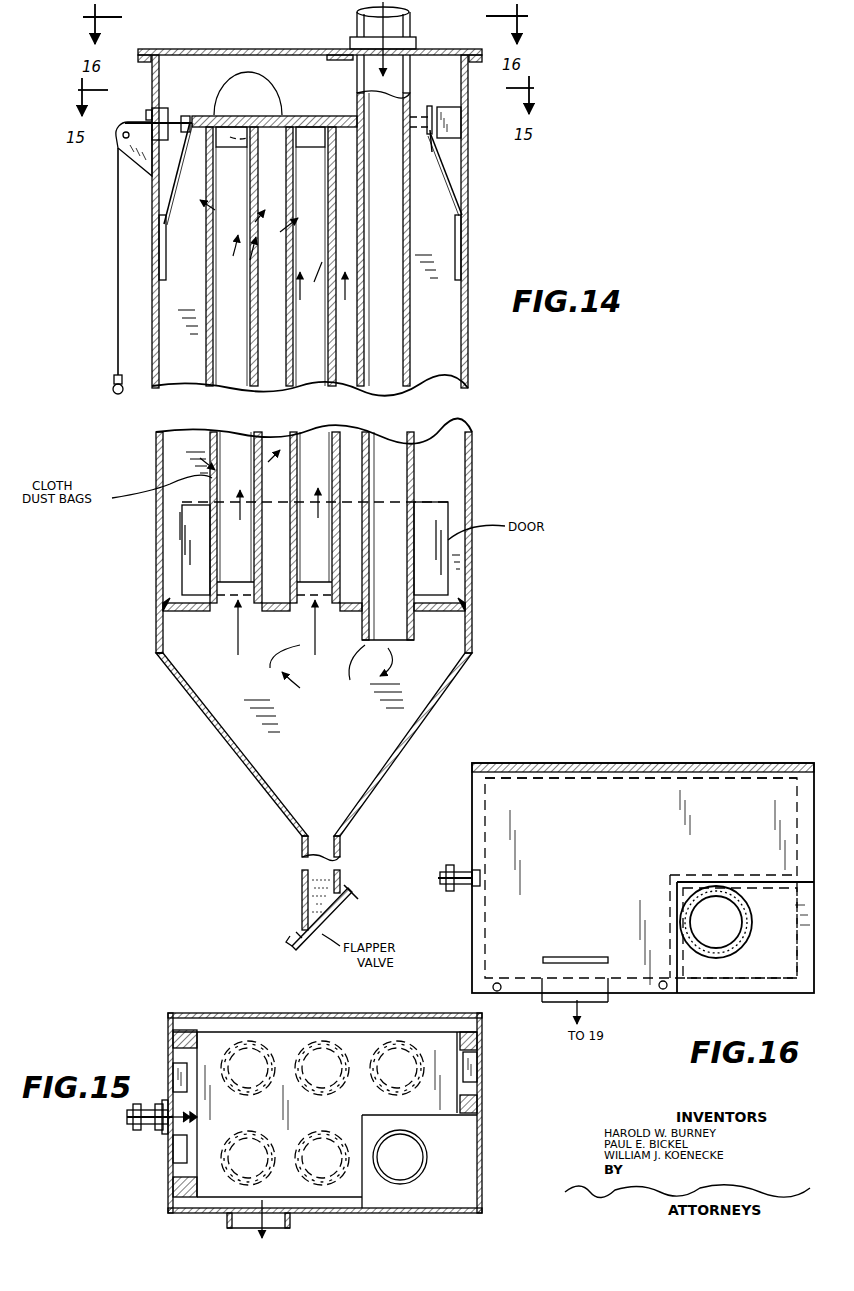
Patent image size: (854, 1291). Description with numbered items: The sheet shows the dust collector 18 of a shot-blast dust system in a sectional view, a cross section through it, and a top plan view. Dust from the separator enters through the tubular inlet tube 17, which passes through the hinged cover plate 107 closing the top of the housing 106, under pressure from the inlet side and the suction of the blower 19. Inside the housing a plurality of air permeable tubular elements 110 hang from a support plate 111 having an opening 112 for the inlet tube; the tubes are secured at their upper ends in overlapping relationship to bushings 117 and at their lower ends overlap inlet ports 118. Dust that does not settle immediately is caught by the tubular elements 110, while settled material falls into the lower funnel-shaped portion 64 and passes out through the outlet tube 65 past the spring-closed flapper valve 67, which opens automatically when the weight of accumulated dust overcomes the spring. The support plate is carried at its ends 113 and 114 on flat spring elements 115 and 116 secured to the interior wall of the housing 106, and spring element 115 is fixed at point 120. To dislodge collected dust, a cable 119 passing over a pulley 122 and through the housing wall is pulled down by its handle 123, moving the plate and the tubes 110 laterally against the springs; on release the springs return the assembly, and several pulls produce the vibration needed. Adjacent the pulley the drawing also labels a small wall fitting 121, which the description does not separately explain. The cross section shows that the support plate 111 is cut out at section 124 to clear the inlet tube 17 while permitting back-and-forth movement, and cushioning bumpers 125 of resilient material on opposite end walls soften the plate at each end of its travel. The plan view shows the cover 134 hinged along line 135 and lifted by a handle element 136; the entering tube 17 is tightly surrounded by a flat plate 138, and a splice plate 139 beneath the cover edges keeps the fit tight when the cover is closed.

In FIG. 14, the inlet tube 17 is at (400, 25).
In FIG. 15, the inlet tube 17 is at (403, 1172).
In FIG. 16, the inlet tube 17 is at (720, 889).
In FIG. 16, the dust collector 18 is at (648, 858).
In FIG. 14, the suction blower 19 is at (262, 68).
In FIG. 15, the suction blower 19 is at (227, 1222).
In FIG. 14, the funnel-shaped portion 64 is at (236, 742).
In FIG. 14, the outlet tube 65 is at (302, 890).
In FIG. 14, the flapper valve 67 is at (332, 932).
In FIG. 14, the housing 106 is at (155, 540).
In FIG. 15, the housing 106 is at (250, 1013).
In FIG. 14, the hinged cover plate 107 is at (238, 49).
In FIG. 14, the air permeable tubular elements 110 is at (206, 300).
In FIG. 15, the air permeable tubular elements 110 is at (408, 1042).
In FIG. 15, the support plate 111 is at (294, 1042).
In FIG. 14, the opening 112 is at (414, 117).
In FIG. 14, the end of support plate 113 is at (214, 116).
In FIG. 14, the end of support plate 114 is at (430, 142).
In FIG. 14, the flat spring element 115 is at (178, 176).
In FIG. 15, the flat spring element 115 is at (180, 1190).
In FIG. 14, the flat spring element 116 is at (446, 190).
In FIG. 15, the flat spring element 116 is at (482, 1100).
In FIG. 14, the bushings 117 is at (220, 150).
In FIG. 14, the inlet ports 118 is at (226, 612).
In FIG. 14, the cable 119 is at (116, 230).
In FIG. 14, the securing point 120 is at (186, 116).
In FIG. 15, the securing point 120 is at (196, 1117).
In FIG. 14, the bolt 121 is at (150, 112).
In FIG. 15, the bolt 121 is at (162, 1128).
In FIG. 14, the pulley 122 is at (115, 140).
In FIG. 15, the pulley 122 is at (130, 1126).
In FIG. 16, the pulley 122 is at (468, 880).
In FIG. 14, the handle 123 is at (112, 389).
In FIG. 15, the cut-out section 124 is at (440, 1116).
In FIG. 14, the cushioning bumpers 125 is at (162, 140).
In FIG. 15, the cushioning bumpers 125 is at (172, 1078).
In FIG. 16, the cover 134 is at (572, 822).
In FIG. 16, the hinge line 135 is at (626, 758).
In FIG. 16, the handle element 136 is at (570, 957).
In FIG. 16, the flat plate 138 is at (764, 976).
In FIG. 14, the splice plate 139 is at (343, 62).
In FIG. 16, the splice plate 139 is at (707, 878).